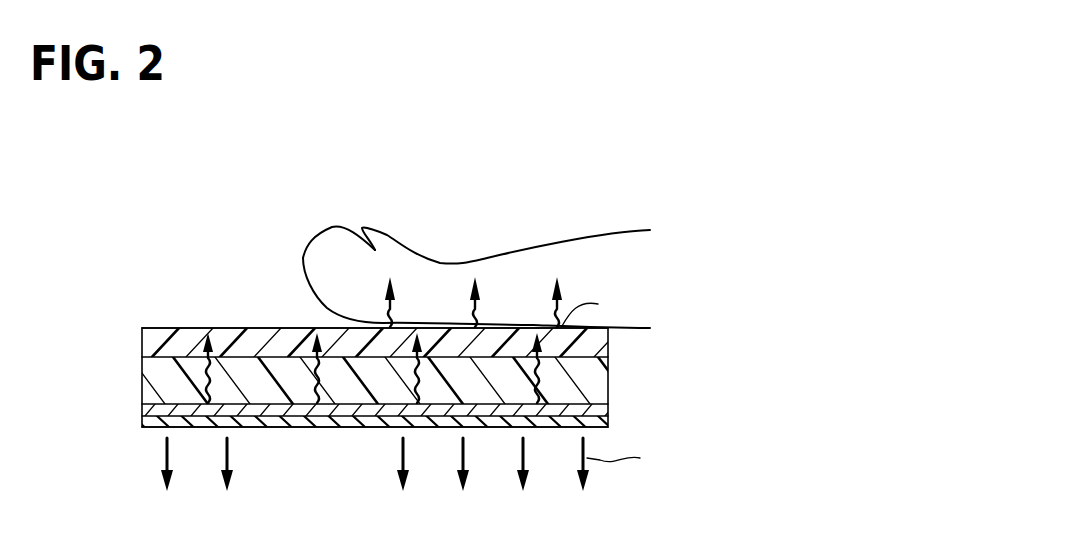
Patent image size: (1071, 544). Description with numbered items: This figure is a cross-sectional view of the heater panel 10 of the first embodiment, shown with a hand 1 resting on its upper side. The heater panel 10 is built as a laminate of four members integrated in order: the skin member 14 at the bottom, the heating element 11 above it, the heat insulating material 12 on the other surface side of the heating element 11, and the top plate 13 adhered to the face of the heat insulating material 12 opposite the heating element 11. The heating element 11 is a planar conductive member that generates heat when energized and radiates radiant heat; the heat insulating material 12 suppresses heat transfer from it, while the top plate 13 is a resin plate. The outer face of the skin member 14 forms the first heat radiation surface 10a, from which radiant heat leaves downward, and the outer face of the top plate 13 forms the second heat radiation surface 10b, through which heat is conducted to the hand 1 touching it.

The human body (hand) 1 is at (541, 245).
The heater panel 10 is at (425, 368).
The first heat radiation surface 10a is at (299, 427).
The second heat radiation surface 10b is at (240, 328).
The heating element 11 is at (142, 410).
The heat insulating material 12 is at (142, 381).
The top plate 13 is at (142, 346).
The skin member 14 is at (142, 423).